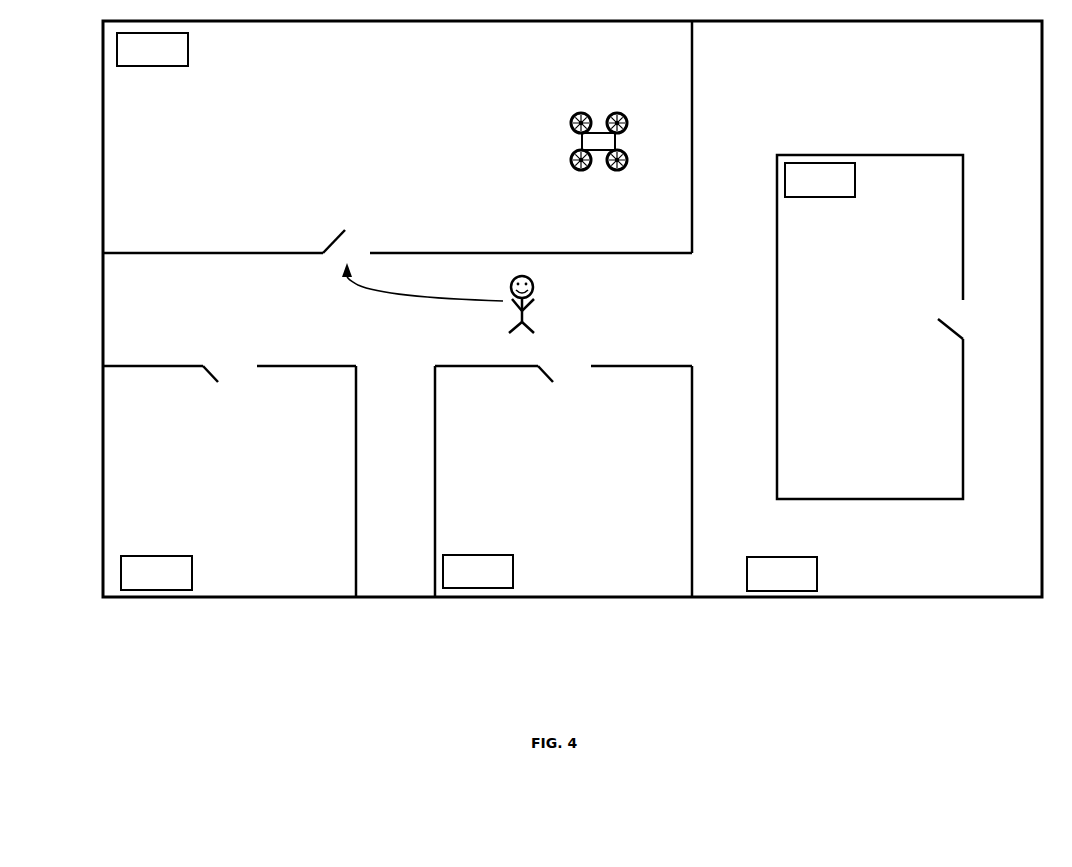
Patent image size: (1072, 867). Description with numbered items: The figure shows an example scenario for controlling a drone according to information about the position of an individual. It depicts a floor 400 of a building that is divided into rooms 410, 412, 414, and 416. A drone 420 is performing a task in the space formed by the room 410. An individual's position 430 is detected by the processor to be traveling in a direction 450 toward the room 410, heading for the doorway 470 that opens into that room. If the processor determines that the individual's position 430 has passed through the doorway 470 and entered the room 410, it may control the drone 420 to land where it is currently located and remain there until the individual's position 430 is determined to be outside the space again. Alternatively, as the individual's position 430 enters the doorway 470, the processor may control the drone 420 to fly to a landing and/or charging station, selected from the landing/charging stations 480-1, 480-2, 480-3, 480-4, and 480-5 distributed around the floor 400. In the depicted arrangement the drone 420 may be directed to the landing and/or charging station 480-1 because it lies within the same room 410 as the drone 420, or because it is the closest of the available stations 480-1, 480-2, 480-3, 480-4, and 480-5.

The floor 400 is at (102, 308).
The room 410 is at (382, 137).
The room 412 is at (238, 485).
The room 414 is at (587, 491).
The room 416 is at (863, 346).
The drone 420 is at (600, 107).
The individual's position 430 is at (570, 296).
The direction 450 is at (457, 318).
The doorway 470 is at (333, 231).
The landing and/or charging station 480-1 is at (174, 57).
The landing and/or charging station 480-2 is at (176, 582).
The landing and/or charging station 480-3 is at (497, 581).
The landing and/or charging station 480-4 is at (840, 188).
The landing and/or charging station 480-5 is at (802, 582).